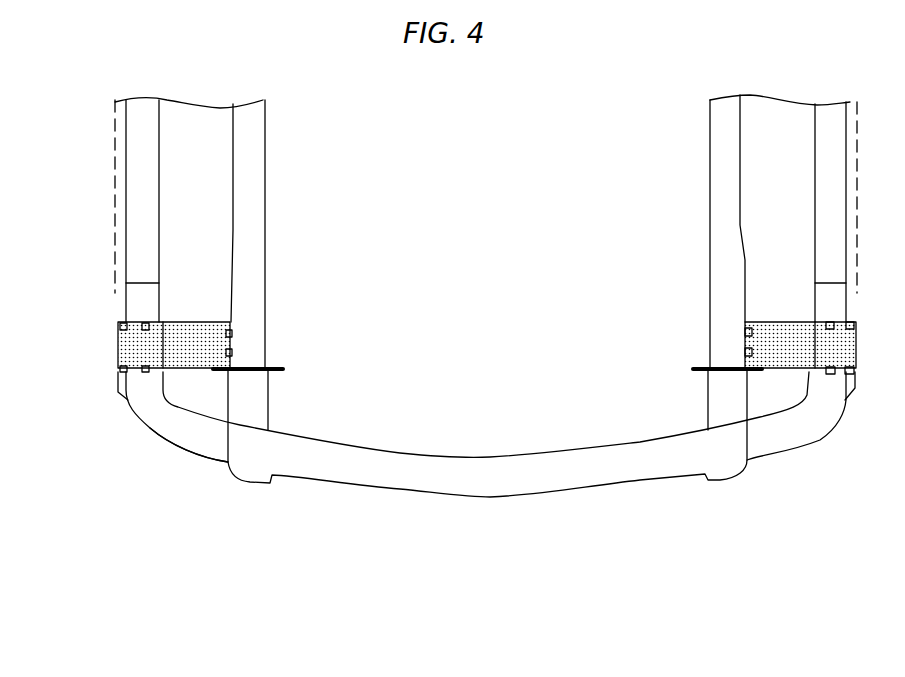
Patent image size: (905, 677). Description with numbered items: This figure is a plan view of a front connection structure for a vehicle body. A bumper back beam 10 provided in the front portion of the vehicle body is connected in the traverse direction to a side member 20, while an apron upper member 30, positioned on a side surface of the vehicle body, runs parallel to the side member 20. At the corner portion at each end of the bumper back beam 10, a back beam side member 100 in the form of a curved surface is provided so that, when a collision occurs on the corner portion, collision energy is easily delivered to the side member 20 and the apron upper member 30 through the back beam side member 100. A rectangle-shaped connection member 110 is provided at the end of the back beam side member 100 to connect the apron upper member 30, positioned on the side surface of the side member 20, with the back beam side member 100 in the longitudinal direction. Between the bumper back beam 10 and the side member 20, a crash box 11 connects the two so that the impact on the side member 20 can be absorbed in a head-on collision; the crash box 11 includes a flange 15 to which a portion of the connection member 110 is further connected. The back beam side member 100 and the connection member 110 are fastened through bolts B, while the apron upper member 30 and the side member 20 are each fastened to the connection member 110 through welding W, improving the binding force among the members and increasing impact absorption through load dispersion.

The bumper back beam 10 is at (397, 478).
The crash box 11 is at (233, 398).
The flange 15 is at (283, 371).
The side member 20 is at (258, 283).
The apron upper member 30 is at (133, 290).
The back beam side member 100 is at (183, 464).
The connection member 110 is at (108, 345).
The welding W is at (130, 320).
The bolts B is at (142, 373).